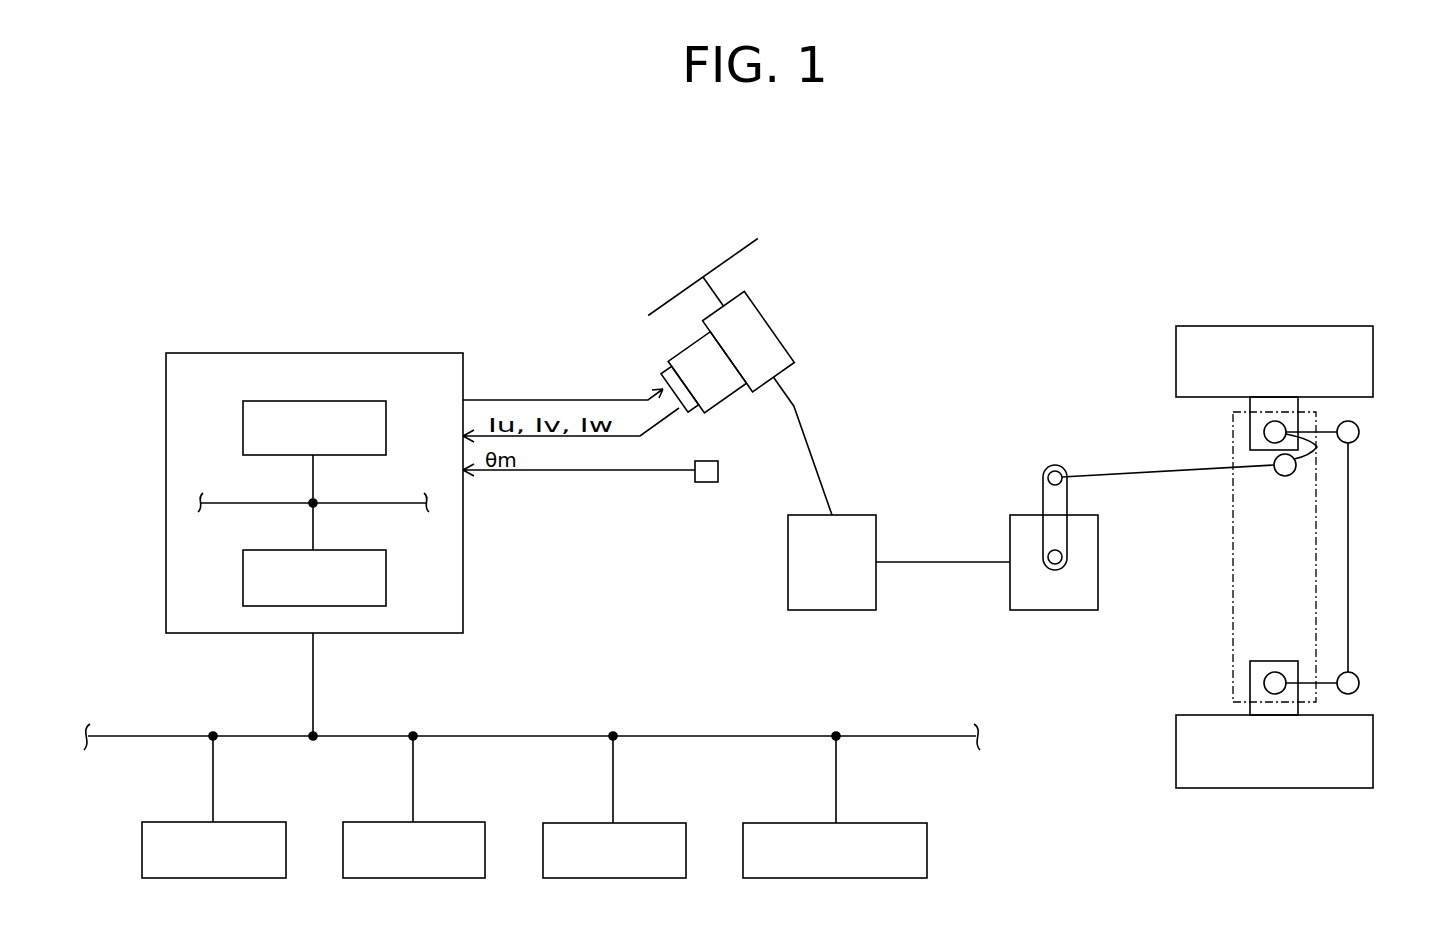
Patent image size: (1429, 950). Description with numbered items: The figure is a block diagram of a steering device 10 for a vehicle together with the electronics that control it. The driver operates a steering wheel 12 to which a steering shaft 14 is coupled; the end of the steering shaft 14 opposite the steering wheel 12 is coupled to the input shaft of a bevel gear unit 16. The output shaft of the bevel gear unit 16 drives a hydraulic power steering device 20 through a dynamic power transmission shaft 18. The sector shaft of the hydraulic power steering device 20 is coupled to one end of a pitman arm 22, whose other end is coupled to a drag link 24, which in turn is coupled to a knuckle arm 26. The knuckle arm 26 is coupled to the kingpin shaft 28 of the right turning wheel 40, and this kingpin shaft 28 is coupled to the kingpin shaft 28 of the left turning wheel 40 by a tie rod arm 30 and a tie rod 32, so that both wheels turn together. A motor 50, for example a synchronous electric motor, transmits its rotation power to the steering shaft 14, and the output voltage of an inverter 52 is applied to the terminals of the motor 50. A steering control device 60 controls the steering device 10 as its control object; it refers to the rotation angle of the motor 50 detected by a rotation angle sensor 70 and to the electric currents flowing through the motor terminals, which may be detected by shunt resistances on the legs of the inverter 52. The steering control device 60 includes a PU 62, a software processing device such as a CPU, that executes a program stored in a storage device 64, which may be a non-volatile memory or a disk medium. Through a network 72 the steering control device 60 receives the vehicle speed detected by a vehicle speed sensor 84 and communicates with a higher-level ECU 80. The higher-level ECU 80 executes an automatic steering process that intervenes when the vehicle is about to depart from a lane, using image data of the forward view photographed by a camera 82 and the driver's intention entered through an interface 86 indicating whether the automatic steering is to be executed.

The steering device 10 is at (1003, 278).
The steering wheel 12 is at (728, 255).
The steering shaft 14 is at (810, 445).
The bevel gear unit 16 is at (788, 563).
The dynamic power transmission shaft 18 is at (935, 565).
The hydraulic power steering device 20 is at (1100, 559).
The pitman arm 22 is at (1043, 483).
The drag link 24 is at (1130, 470).
The knuckle arm 26 is at (1300, 462).
The kingpin shaft 28 is at (1262, 428).
The tie rod arm 30 is at (1332, 428).
The tie rod 32 is at (1350, 553).
The turning wheel 40 is at (1330, 326).
The motor 50 is at (723, 407).
The inverter 52 is at (661, 373).
The steering control device 60 is at (397, 353).
The PU 62 is at (342, 401).
The storage device 64 is at (342, 550).
The rotation angle sensor 70 is at (706, 484).
The network 72 is at (318, 683).
The higher-level ECU 80 is at (240, 822).
The camera 82 is at (440, 822).
The vehicle speed sensor 84 is at (640, 823).
The interface 86 is at (873, 823).